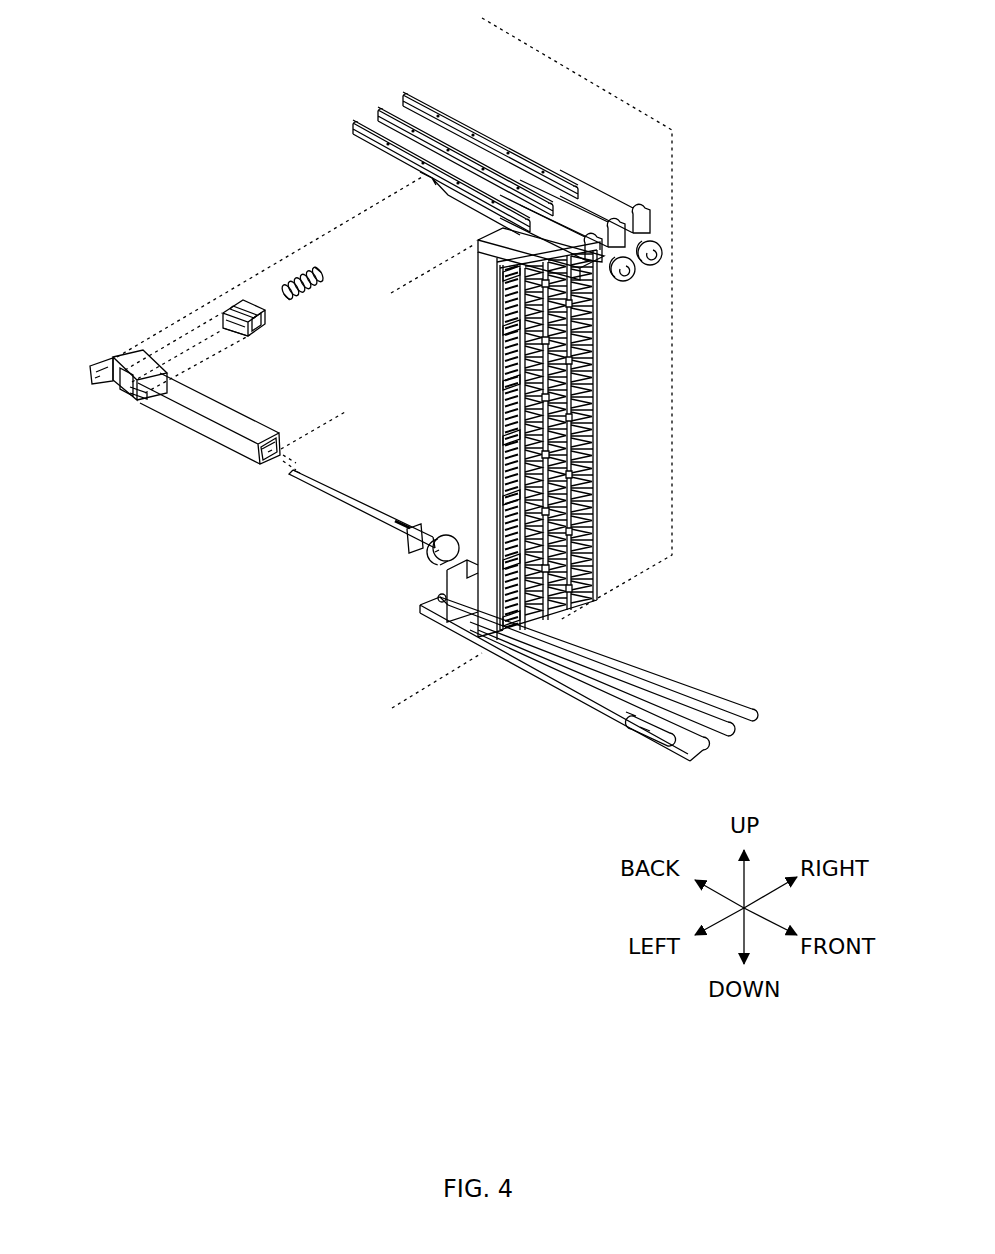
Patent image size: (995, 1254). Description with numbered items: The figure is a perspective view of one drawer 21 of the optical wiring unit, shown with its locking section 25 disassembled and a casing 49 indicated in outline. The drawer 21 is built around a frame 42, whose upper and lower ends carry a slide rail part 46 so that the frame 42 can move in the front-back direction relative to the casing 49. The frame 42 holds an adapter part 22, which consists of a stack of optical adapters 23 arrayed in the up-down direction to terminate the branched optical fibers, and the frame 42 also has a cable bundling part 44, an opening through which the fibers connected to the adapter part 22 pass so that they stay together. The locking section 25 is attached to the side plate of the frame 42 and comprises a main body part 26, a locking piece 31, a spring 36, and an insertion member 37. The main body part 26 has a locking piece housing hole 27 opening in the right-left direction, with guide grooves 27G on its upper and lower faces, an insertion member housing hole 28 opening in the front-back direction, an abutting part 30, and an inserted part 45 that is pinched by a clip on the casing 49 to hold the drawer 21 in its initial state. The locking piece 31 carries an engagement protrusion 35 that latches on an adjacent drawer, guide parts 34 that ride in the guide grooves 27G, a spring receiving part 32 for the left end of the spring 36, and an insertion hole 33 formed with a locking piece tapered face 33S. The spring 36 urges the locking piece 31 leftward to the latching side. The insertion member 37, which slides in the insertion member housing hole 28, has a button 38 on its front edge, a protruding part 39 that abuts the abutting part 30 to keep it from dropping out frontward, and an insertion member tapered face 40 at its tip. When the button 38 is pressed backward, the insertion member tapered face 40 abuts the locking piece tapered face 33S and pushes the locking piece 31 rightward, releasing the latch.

The drawer 21 is at (589, 451).
The adapter part 22 is at (495, 441).
The optical adapter 23 is at (518, 478).
The locking section 25 is at (185, 389).
The main body part 26 is at (201, 466).
The locking piece housing hole 27 is at (97, 406).
The guide groove 27G is at (130, 398).
The insertion member housing hole 28 is at (268, 482).
The abutting part 30 is at (255, 465).
The locking piece 31 is at (260, 310).
The spring receiving part 32 is at (272, 302).
The insertion hole 33 is at (297, 355).
The locking piece tapered face 33S is at (258, 330).
The guide part 34 is at (246, 300).
The engagement protrusion 35 is at (228, 328).
The spring 36 is at (300, 275).
The insertion member 37 is at (472, 437).
The button 38 is at (440, 560).
The protruding part 39 is at (410, 548).
The insertion member tapered face 40 is at (307, 467).
The frame 42 is at (612, 212).
The cable bundling part 44 is at (708, 712).
The inserted part 45 is at (92, 367).
The slide rail part 46 is at (380, 117).
The casing 49 is at (674, 176).